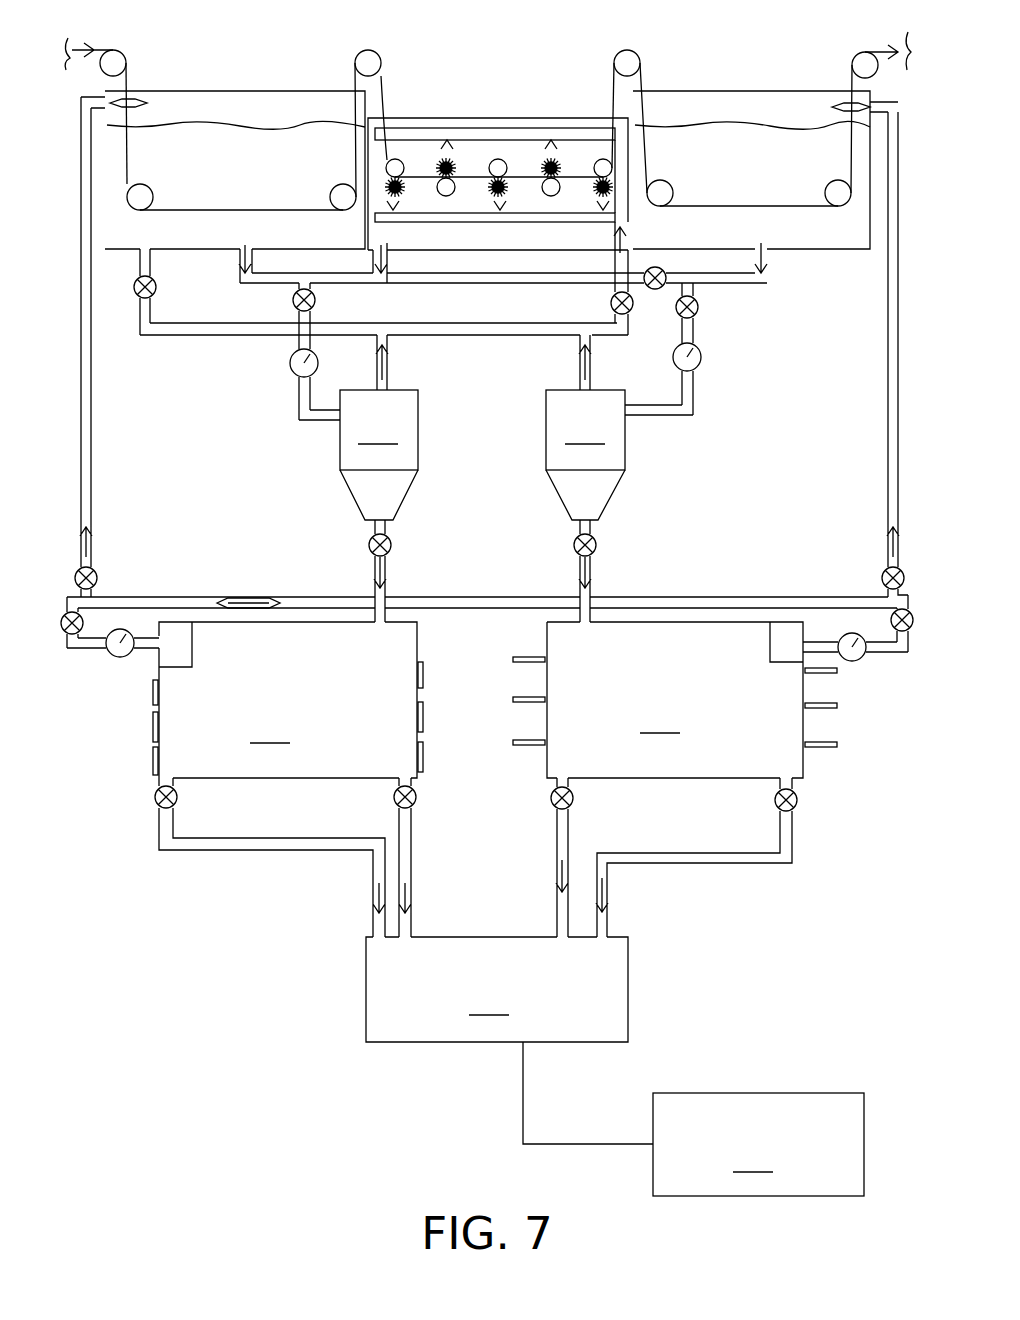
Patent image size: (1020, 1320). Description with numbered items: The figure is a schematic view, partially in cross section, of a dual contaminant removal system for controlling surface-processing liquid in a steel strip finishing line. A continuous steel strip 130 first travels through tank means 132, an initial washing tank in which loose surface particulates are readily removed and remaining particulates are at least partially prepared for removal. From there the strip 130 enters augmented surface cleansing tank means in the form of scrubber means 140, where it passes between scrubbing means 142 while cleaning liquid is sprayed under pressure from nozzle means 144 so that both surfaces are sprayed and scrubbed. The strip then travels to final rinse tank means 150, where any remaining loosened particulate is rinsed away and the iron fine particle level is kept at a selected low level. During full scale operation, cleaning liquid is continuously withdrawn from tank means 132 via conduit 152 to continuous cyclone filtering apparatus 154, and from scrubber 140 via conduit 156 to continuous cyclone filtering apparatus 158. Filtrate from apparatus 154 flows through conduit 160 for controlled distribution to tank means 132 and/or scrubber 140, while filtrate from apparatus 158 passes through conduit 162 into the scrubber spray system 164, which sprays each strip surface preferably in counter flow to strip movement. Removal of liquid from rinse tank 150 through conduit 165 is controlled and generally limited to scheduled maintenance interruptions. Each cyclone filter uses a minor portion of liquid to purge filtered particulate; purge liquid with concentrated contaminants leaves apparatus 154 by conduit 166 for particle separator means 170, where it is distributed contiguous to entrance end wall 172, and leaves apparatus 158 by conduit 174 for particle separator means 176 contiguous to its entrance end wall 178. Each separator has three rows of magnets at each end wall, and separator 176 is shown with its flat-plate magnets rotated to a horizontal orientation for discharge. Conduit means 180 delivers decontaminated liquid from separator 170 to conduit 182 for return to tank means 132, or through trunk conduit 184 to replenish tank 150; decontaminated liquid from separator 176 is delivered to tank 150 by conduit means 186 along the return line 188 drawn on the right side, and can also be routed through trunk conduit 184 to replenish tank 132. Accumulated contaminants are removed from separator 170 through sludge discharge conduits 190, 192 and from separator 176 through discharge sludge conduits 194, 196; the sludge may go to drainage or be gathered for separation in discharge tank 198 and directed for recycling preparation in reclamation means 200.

The continuous steel strip 130 is at (128, 78).
The tank means 132 is at (294, 73).
The scrubber means 140 is at (498, 144).
The scrubbing means 142 is at (543, 158).
The nozzle means 144 is at (498, 210).
The final rinse tank means 150 is at (788, 69).
The conduit 152 is at (238, 262).
The continuous cyclone filtering apparatus 154 is at (379, 455).
The conduit 156 is at (377, 268).
The continuous cyclone filtering apparatus 158 is at (585, 455).
The conduit 160 is at (388, 385).
The conduit 162 is at (580, 358).
The scrubber spray system 164 is at (618, 231).
The conduit 165 is at (758, 270).
The conduit 166 is at (370, 565).
The particle separator means 170 is at (285, 700).
The entrance end wall 172 is at (418, 650).
The conduit 174 is at (580, 565).
The particle separator means 176 is at (692, 700).
The entrance end wall 178 is at (547, 650).
The conduit means 180 is at (85, 648).
The conduit 182 is at (92, 527).
The trunk conduit 184 is at (295, 597).
The conduit means 186 is at (895, 655).
The supply line 188 is at (888, 433).
The sludge discharge conduit 190 is at (410, 820).
The sludge discharge conduit 192 is at (163, 827).
The discharge sludge conduit 194 is at (567, 823).
The discharge sludge conduit 196 is at (793, 830).
The discharge tank 198 is at (509, 1040).
The reclamation means 200 is at (758, 1144).